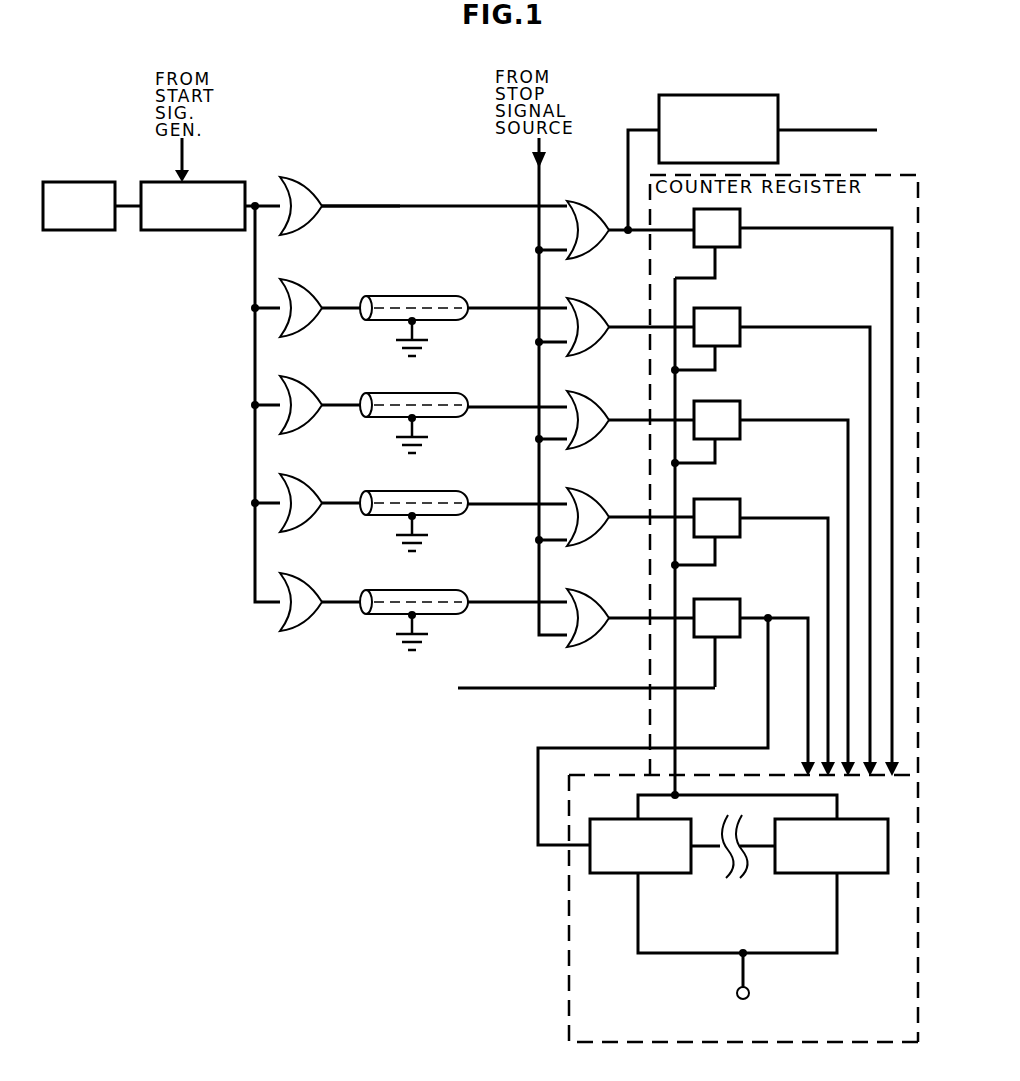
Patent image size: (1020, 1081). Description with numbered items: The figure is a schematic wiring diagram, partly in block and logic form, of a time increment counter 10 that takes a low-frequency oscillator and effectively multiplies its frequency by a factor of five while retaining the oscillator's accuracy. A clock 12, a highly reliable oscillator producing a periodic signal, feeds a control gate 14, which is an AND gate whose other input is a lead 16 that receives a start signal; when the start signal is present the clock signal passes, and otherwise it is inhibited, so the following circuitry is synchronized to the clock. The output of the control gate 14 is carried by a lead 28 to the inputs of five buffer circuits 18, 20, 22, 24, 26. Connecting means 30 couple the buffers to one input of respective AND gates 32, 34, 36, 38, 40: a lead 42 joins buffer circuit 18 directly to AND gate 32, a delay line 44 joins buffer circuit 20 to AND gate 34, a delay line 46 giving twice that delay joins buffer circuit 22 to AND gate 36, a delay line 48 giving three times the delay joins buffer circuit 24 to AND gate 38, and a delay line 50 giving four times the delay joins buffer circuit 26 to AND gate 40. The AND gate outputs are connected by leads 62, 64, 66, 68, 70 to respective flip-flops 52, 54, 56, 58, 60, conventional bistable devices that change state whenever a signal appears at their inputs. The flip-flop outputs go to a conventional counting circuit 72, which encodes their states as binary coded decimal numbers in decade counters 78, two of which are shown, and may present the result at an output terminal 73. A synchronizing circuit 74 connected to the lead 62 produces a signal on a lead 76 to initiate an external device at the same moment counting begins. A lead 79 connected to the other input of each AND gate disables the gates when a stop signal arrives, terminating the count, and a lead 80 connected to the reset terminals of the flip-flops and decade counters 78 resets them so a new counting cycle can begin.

The time increment counter 10 is at (200, 560).
The clock 12 is at (60, 186).
The control gate 14 is at (222, 226).
The lead 16 is at (183, 158).
The buffer circuit 18 is at (300, 194).
The buffer circuit 20 is at (300, 296).
The buffer circuit 22 is at (302, 393).
The buffer circuit 24 is at (300, 491).
The buffer circuit 26 is at (302, 590).
The lead 28 is at (255, 362).
The connecting means 30 is at (396, 196).
The AND gate 32 is at (590, 204).
The AND gate 34 is at (598, 292).
The AND gate 36 is at (596, 413).
The AND gate 38 is at (596, 510).
The AND gate 40 is at (600, 608).
The lead 42 is at (402, 214).
The delay line 44 is at (408, 296).
The delay line 46 is at (408, 393).
The delay line 48 is at (396, 491).
The delay line 50 is at (403, 590).
The flip-flop 52 is at (738, 221).
The flip-flop 54 is at (732, 312).
The flip-flop 56 is at (732, 405).
The flip-flop 58 is at (732, 503).
The flip-flop 60 is at (730, 590).
The lead 62 is at (638, 236).
The lead 64 is at (640, 333).
The lead 66 is at (638, 426).
The lead 68 is at (640, 523).
The lead 70 is at (640, 624).
The counting circuit 72 is at (852, 1032).
The output terminal 73 is at (756, 976).
The synchronizing circuit 74 is at (732, 95).
The lead 76 is at (800, 130).
The decade counter 78 is at (658, 873).
The lead 79 is at (539, 150).
The lead 80 is at (527, 690).